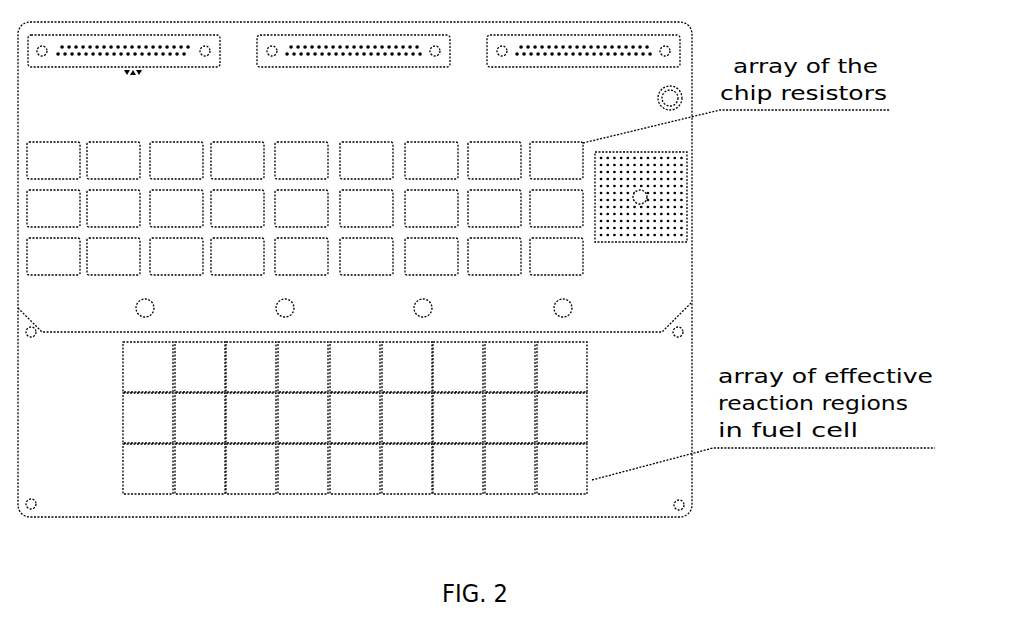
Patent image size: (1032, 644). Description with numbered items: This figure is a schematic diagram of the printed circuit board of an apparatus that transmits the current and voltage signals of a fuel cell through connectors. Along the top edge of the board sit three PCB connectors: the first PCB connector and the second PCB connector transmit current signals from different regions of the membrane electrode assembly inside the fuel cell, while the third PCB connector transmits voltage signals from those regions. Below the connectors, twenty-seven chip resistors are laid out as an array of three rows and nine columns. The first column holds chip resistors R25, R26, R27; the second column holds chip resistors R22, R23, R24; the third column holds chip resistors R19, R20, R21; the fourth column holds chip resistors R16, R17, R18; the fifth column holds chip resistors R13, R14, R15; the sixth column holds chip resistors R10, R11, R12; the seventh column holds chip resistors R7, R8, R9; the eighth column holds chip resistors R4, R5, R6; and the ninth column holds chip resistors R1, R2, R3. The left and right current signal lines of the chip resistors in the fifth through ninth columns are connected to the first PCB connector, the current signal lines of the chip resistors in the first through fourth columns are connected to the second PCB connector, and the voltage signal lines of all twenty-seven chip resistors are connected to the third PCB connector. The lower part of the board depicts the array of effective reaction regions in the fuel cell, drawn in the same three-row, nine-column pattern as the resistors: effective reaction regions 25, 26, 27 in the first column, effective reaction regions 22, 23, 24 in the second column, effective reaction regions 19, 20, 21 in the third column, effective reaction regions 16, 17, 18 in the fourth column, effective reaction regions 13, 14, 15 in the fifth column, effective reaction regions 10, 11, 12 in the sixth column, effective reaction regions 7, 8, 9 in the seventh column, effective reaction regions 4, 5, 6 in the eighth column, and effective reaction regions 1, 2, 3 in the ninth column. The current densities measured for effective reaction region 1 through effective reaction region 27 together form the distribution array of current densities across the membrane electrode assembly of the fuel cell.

The effective reaction region 1 is at (562, 367).
The effective reaction region 2 is at (562, 418).
The effective reaction region 3 is at (562, 469).
The effective reaction region 4 is at (510, 367).
The effective reaction region 5 is at (510, 418).
The effective reaction region 6 is at (510, 469).
The effective reaction region 7 is at (458, 367).
The effective reaction region 8 is at (458, 418).
The effective reaction region 9 is at (458, 469).
The effective reaction region 10 is at (407, 367).
The effective reaction region 11 is at (407, 418).
The effective reaction region 12 is at (407, 469).
The effective reaction region 13 is at (355, 367).
The effective reaction region 14 is at (355, 418).
The effective reaction region 15 is at (355, 469).
The effective reaction region 16 is at (303, 367).
The effective reaction region 17 is at (303, 418).
The effective reaction region 18 is at (303, 469).
The effective reaction region 19 is at (251, 367).
The effective reaction region 20 is at (251, 418).
The effective reaction region 21 is at (251, 469).
The effective reaction region 22 is at (200, 367).
The effective reaction region 23 is at (200, 418).
The effective reaction region 24 is at (200, 469).
The effective reaction region 25 is at (148, 367).
The effective reaction region 26 is at (148, 418).
The effective reaction region 27 is at (148, 469).
The chip resistor R1 is at (556, 160).
The chip resistor R2 is at (556, 208).
The chip resistor R3 is at (556, 256).
The chip resistor R4 is at (494, 160).
The chip resistor R5 is at (494, 208).
The chip resistor R6 is at (494, 256).
The chip resistor R7 is at (431, 160).
The chip resistor R8 is at (431, 208).
The chip resistor R9 is at (431, 256).
The chip resistor R10 is at (366, 160).
The chip resistor R11 is at (366, 208).
The chip resistor R12 is at (366, 256).
The chip resistor R13 is at (301, 160).
The chip resistor R14 is at (301, 208).
The chip resistor R15 is at (301, 256).
The chip resistor R16 is at (237, 160).
The chip resistor R17 is at (237, 208).
The chip resistor R18 is at (237, 256).
The chip resistor R19 is at (176, 160).
The chip resistor R20 is at (176, 208).
The chip resistor R21 is at (176, 256).
The chip resistor R22 is at (113, 160).
The chip resistor R23 is at (113, 208).
The chip resistor R24 is at (113, 256).
The chip resistor R25 is at (53, 160).
The chip resistor R26 is at (53, 208).
The chip resistor R27 is at (53, 256).